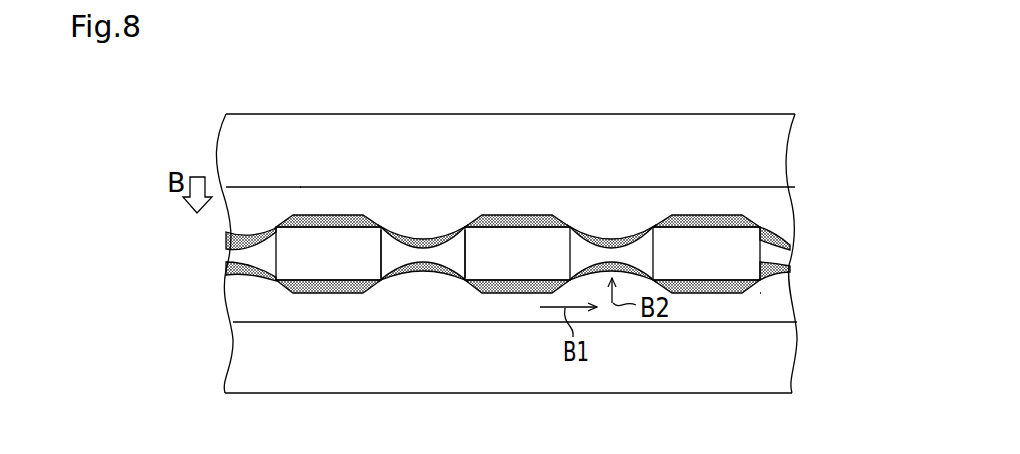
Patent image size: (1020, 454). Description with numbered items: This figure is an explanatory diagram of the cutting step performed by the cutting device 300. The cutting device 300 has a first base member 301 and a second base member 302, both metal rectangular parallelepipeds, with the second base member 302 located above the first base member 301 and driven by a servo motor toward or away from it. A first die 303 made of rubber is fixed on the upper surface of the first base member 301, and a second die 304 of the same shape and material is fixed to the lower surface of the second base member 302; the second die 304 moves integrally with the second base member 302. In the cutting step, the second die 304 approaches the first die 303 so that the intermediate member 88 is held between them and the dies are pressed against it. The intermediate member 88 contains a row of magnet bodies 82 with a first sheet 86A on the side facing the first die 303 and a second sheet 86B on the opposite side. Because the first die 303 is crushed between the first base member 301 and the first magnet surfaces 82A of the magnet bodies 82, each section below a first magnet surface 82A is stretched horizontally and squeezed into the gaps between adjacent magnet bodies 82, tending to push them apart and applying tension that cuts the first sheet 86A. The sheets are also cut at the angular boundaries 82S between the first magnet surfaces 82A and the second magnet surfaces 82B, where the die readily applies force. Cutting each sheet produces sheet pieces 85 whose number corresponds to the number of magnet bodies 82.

The cutting device 300 is at (856, 106).
The first base member 301 is at (775, 365).
The second base member 302 is at (770, 145).
The first die 303 is at (783, 298).
The second die 304 is at (780, 207).
The magnet bodies 82 is at (485, 237).
The first magnet surfaces 82A is at (520, 225).
The second magnet surfaces 82B is at (437, 268).
The boundaries 82S is at (385, 283).
The sheet pieces 85 is at (706, 293).
The first sheet 86A is at (790, 265).
The second sheet 86B is at (795, 241).
The intermediate member 88 is at (250, 259).